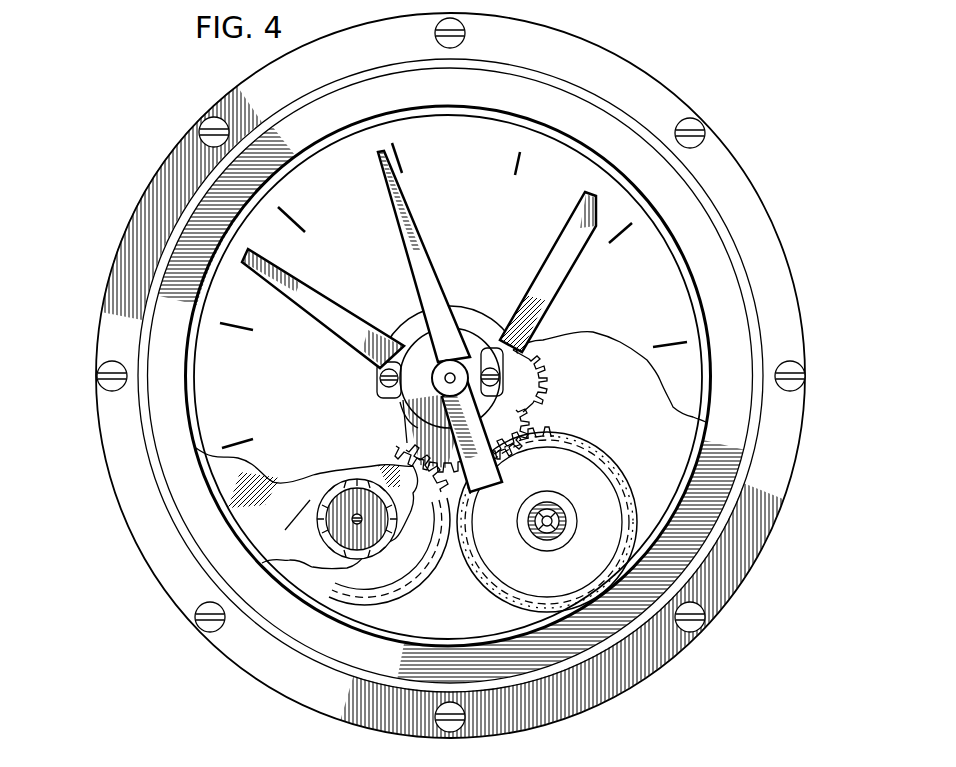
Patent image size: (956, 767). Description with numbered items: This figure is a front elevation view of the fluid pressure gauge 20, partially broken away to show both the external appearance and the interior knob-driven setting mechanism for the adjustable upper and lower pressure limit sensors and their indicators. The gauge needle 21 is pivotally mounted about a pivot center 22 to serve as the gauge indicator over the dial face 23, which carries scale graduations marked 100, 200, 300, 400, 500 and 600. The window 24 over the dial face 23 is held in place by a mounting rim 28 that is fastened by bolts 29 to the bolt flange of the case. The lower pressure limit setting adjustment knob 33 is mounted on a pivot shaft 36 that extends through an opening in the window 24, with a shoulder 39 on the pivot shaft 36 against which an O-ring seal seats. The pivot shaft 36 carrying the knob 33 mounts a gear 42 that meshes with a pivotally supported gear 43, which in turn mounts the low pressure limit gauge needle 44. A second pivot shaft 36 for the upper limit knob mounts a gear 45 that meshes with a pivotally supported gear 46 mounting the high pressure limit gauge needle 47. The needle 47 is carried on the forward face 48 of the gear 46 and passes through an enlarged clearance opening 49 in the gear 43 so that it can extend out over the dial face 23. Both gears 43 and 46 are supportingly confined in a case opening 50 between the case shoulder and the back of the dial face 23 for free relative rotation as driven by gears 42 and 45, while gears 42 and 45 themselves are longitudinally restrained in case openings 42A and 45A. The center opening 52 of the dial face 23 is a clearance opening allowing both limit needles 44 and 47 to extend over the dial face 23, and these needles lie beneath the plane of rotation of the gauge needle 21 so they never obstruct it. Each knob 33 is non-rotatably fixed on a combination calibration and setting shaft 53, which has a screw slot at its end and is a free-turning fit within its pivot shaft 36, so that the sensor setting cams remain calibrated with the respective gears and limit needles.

The fluid pressure gauge 20 is at (672, 68).
The gauge needle 21 is at (377, 173).
The pivot center 22 is at (473, 328).
The dial face 23 is at (693, 288).
The window 24 is at (223, 490).
The mounting rim 28 is at (778, 232).
The bolts 29 is at (708, 128).
The setting adjustment knob 33 is at (313, 508).
The pivot shaft 36 is at (573, 513).
The shoulder 39 is at (536, 508).
The gear 42 is at (378, 534).
The case opening 42A is at (385, 600).
The gear 43 is at (408, 440).
The low pressure limit gauge needle 44 is at (263, 290).
The gear 45 is at (577, 457).
The case opening 45A is at (632, 516).
The gear 46 is at (530, 418).
The high pressure limit gauge needle 47 is at (565, 215).
The forward face 48 is at (447, 360).
The enlarged clearance opening 49 is at (410, 402).
The case opening 50 is at (543, 370).
The center opening 52 is at (403, 326).
The combination calibration and setting shaft 53 is at (357, 514).
The scale graduation 100 is at (261, 435).
The scale graduation 200 is at (260, 332).
The scale graduation 300 is at (309, 234).
The scale graduation 400 is at (410, 174).
The scale graduation 500 is at (511, 178).
The scale graduation 600 is at (602, 247).